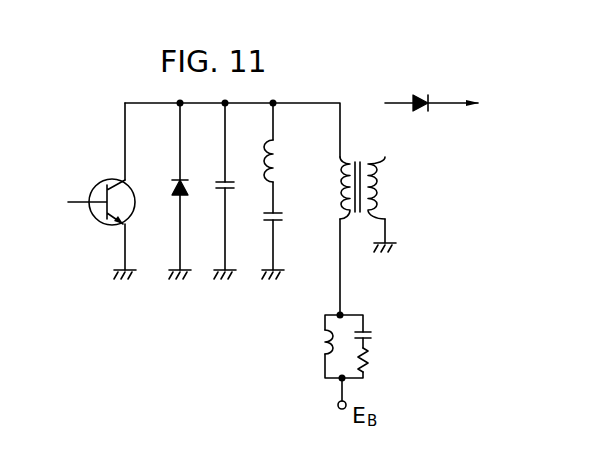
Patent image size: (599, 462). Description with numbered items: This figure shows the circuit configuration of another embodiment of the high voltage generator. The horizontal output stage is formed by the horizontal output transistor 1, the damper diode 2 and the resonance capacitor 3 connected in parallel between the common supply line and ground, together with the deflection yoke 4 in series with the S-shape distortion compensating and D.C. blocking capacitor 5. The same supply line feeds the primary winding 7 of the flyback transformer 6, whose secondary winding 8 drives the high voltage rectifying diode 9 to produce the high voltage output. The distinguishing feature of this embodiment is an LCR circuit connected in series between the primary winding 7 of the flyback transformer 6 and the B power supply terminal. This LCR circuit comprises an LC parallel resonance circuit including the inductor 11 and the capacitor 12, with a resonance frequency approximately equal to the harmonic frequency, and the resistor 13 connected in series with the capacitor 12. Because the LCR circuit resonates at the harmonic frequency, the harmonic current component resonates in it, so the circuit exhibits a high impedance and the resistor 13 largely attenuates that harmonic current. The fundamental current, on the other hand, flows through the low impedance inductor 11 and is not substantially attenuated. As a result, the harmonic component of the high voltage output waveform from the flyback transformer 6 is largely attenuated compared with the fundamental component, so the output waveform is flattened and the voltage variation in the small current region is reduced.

The horizontal output transistor 1 is at (128, 192).
The damper diode 2 is at (190, 180).
The resonance capacitor 3 is at (237, 182).
The deflection yoke 4 is at (281, 162).
The S-shape distortion compensating and D.C. blocking capacitor 5 is at (268, 220).
The flyback transformer 6 is at (366, 183).
The primary winding 7 is at (337, 184).
The secondary winding 8 is at (386, 189).
The high voltage rectifying diode 9 is at (424, 107).
The inductor 11 is at (321, 344).
The capacitor 12 is at (373, 333).
The resistor 13 is at (372, 362).